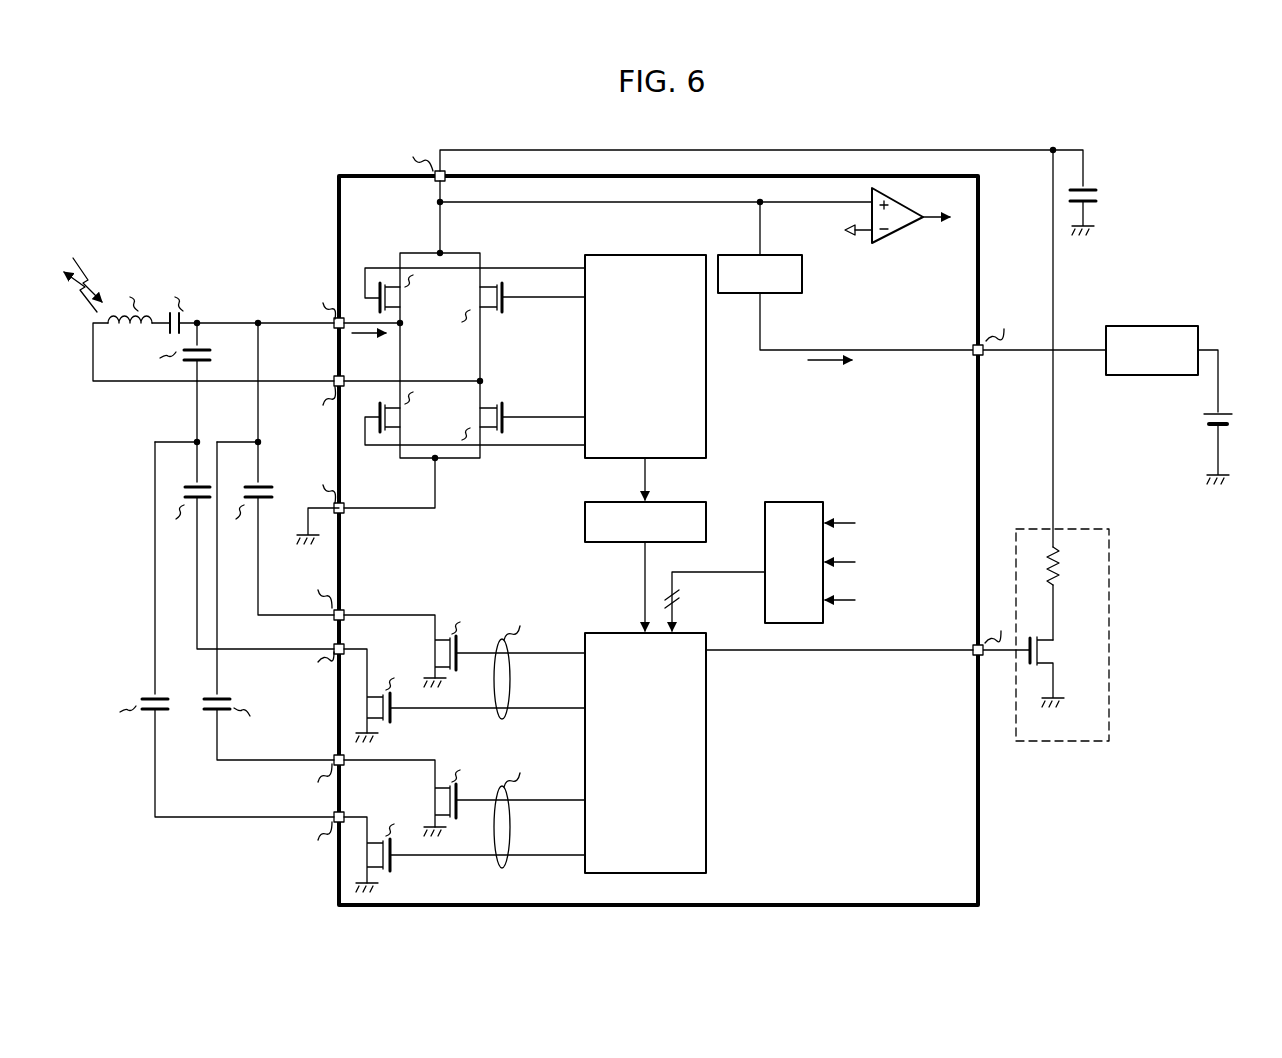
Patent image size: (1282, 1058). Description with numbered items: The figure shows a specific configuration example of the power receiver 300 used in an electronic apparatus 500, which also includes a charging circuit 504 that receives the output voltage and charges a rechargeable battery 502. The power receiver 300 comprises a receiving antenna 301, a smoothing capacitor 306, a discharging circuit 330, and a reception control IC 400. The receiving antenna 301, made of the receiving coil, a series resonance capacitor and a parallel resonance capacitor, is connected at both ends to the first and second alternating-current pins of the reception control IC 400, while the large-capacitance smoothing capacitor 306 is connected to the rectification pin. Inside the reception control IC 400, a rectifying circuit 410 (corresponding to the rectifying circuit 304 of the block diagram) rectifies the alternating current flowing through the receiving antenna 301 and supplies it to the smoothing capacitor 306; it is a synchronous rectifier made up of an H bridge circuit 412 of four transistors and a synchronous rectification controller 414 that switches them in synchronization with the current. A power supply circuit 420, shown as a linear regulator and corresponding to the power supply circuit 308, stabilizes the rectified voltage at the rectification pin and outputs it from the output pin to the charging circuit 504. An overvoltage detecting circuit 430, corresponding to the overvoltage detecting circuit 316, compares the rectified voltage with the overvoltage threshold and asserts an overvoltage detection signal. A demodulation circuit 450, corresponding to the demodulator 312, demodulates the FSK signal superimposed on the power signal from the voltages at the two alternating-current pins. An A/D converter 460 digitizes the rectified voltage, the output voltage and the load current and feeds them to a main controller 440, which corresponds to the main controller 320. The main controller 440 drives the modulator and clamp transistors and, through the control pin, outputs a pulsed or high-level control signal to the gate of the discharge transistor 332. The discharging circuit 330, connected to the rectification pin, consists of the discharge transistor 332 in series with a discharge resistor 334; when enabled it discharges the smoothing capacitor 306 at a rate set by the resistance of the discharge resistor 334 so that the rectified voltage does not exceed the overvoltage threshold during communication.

The electronic apparatus 500 is at (1272, 121).
The power receiver 300 is at (1118, 142).
The reception control IC 400 is at (980, 848).
The smoothing capacitor 306 is at (1100, 198).
The power supply circuit 420 is at (767, 297).
The power supply circuit 308 is at (782, 295).
The overvoltage detecting circuit 430 is at (891, 235).
The overvoltage detecting circuit 316 is at (897, 244).
The charging circuit 504 is at (1152, 322).
The battery 502 is at (1233, 422).
The discharging circuit 330 is at (1077, 635).
The discharge resistor 334 is at (1062, 572).
The discharge transistor 332 is at (1060, 648).
The rectifying circuit 410 is at (475, 418).
The rectifying circuit 304 is at (475, 418).
The H bridge circuit 412 is at (484, 472).
The synchronous rectification controller 414 is at (460, 532).
The demodulation circuit 450 is at (667, 506).
The demodulator 312 is at (660, 500).
The A/D converter 460 is at (790, 500).
The main controller 440 is at (701, 753).
The main controller 320 is at (708, 797).
The receiving antenna 301 is at (230, 388).